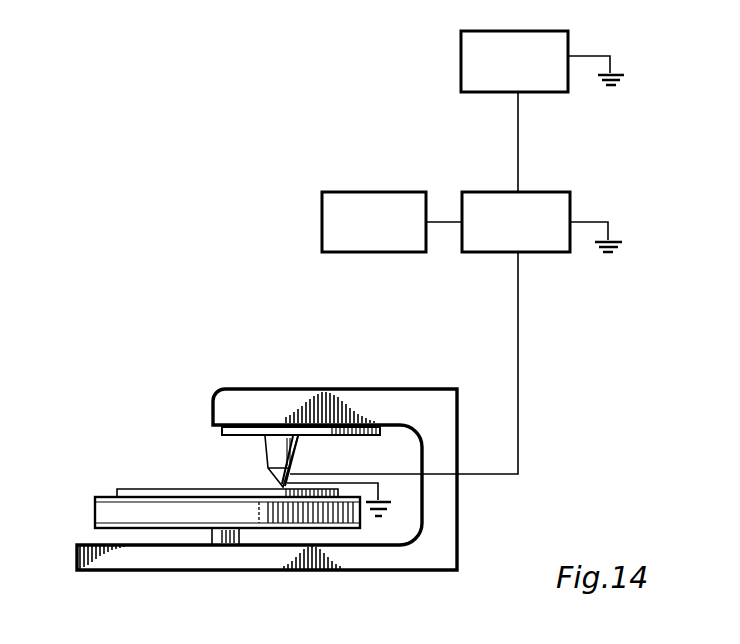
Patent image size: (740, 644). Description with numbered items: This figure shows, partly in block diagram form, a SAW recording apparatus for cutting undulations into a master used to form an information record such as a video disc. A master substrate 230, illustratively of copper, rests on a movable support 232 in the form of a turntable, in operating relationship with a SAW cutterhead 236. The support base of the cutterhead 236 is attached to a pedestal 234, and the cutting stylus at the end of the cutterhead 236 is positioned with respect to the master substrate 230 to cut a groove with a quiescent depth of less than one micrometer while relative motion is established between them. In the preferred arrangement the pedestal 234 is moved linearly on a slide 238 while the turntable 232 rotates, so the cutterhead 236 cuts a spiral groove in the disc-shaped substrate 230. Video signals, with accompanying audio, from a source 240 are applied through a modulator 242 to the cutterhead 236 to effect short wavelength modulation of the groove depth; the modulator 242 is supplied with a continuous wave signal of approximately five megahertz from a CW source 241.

The master substrate 230 is at (137, 489).
The movable support 232 is at (95, 512).
The pedestal 234 is at (267, 456).
The SAW cutterhead 236 is at (295, 473).
The slide 238 is at (374, 436).
The source 240 is at (570, 34).
The CW source 241 is at (385, 252).
The modulator 242 is at (572, 196).